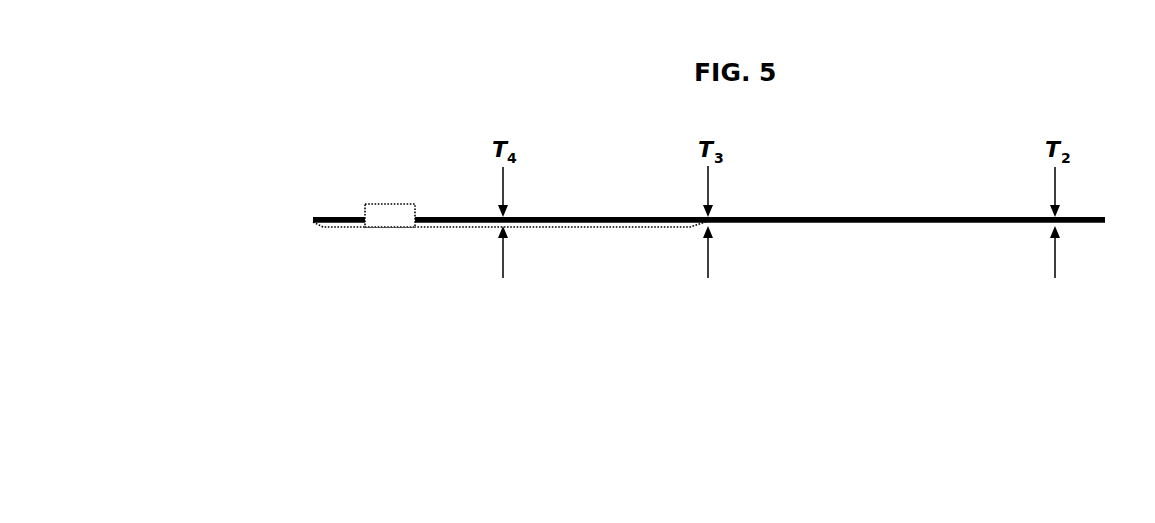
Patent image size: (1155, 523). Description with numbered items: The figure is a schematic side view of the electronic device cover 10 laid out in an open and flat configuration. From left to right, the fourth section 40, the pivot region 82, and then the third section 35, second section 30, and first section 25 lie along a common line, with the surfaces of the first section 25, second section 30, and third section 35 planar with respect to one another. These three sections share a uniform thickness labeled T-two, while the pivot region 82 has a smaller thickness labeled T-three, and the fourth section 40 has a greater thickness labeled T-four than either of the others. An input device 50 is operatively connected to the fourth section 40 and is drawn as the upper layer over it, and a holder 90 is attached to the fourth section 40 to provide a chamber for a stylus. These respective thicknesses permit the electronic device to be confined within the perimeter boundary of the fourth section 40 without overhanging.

The electronic device cover 10 is at (270, 219).
The first section 25 is at (948, 218).
The second section 30 is at (840, 218).
The third section 35 is at (753, 218).
The fourth section 40 is at (583, 229).
The input device 50 is at (552, 204).
The pivot region 82 is at (712, 217).
The holder 90 is at (398, 228).